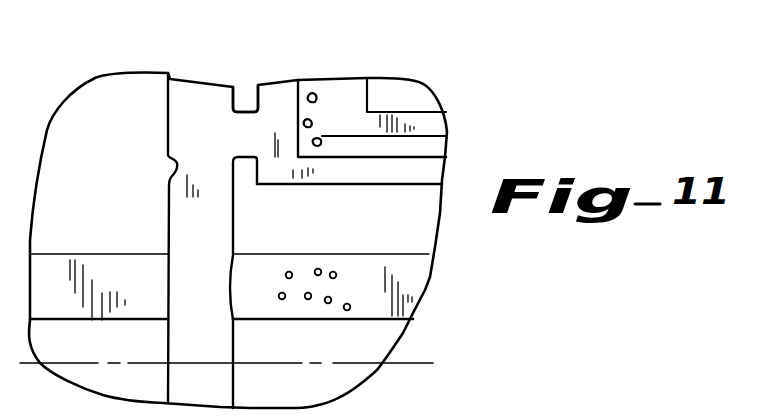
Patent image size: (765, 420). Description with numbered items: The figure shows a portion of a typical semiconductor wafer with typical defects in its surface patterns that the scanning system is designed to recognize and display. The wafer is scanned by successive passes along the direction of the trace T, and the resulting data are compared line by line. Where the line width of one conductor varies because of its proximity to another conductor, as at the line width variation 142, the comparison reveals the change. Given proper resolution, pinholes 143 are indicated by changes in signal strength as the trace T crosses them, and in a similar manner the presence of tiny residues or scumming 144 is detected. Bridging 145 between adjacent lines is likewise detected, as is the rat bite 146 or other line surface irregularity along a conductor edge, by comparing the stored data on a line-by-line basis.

The line width variation 142 is at (172, 287).
The pinholes 143 is at (330, 298).
The residues (scumming) 144 is at (322, 139).
The bridging 145 is at (248, 137).
The rat bite 146 is at (176, 177).
The trace T is at (410, 362).